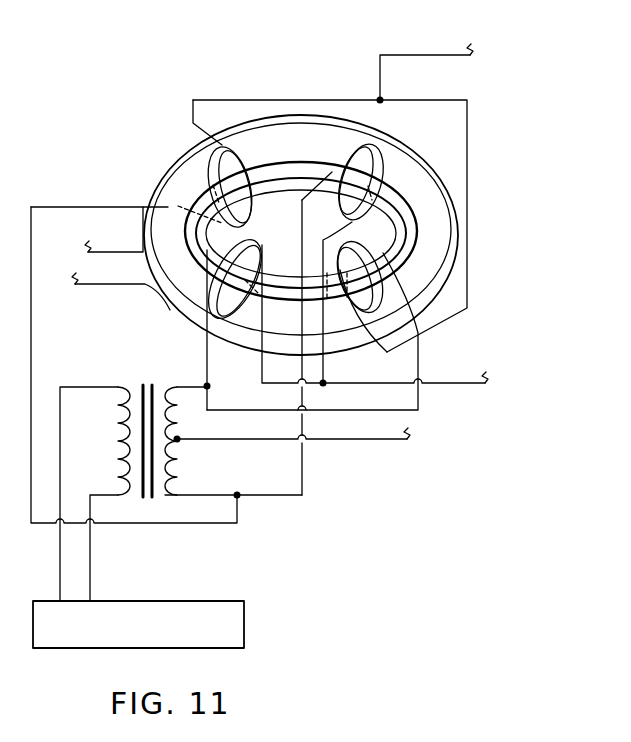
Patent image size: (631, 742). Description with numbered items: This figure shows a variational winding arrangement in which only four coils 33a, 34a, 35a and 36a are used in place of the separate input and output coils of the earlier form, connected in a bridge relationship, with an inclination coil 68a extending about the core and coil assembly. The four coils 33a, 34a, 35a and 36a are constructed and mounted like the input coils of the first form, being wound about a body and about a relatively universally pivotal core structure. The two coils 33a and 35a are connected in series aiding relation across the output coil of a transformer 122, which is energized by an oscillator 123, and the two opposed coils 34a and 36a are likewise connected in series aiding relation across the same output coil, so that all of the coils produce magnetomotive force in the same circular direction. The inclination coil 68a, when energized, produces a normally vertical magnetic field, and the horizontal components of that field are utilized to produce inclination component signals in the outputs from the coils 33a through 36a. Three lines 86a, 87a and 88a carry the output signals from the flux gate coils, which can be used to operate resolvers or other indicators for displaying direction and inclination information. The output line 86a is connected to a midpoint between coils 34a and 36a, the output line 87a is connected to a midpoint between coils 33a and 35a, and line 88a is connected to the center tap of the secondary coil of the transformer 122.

The inclination coil 68a is at (172, 157).
The coil 33a is at (251, 253).
The coil 34a is at (241, 163).
The coil 35a is at (380, 172).
The coil 36a is at (396, 262).
The output line 86a is at (405, 57).
The output line 87a is at (388, 382).
The output line 88a is at (363, 440).
The transformer 122 is at (148, 505).
The oscillator 123 is at (247, 610).